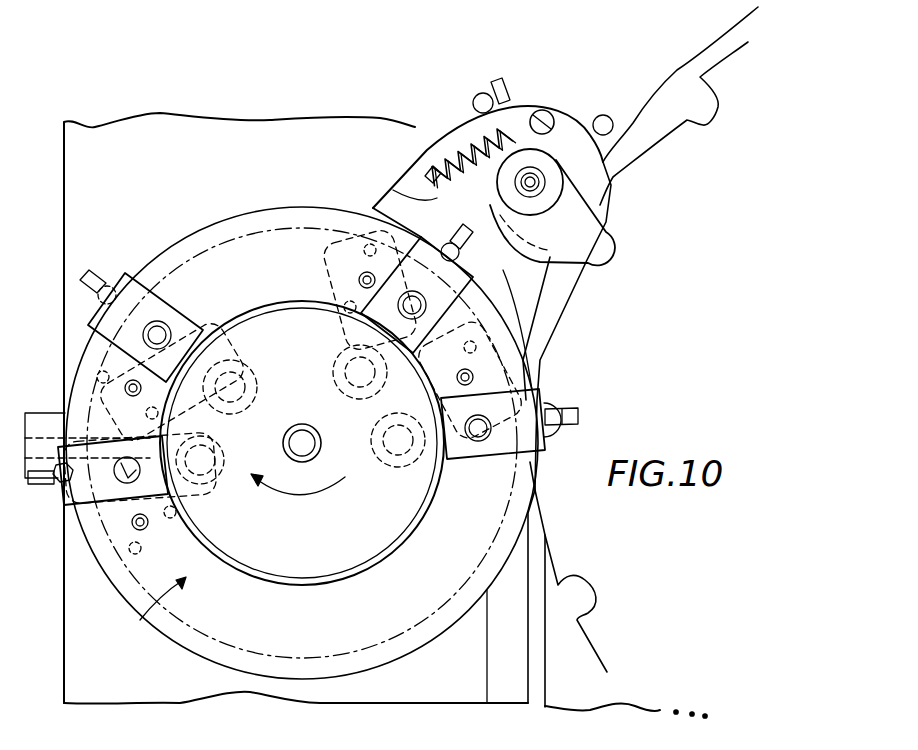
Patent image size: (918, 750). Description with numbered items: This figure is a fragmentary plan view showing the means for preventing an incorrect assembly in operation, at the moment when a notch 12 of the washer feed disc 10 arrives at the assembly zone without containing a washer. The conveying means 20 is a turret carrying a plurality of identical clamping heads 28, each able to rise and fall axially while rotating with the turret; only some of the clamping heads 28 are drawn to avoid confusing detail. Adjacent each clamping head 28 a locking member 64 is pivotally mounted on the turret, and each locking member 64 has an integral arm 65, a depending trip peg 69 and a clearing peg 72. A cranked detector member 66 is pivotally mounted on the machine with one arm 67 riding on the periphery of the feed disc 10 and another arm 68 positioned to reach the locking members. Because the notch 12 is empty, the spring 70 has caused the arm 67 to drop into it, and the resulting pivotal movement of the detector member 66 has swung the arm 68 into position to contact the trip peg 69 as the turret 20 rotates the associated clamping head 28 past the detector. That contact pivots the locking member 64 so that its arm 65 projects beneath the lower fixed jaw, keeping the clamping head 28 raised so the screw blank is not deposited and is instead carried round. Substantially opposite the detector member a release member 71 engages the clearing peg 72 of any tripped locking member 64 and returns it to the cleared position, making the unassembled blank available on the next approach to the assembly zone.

The washer feed disc 10 is at (642, 370).
The washer collecting and retaining notch 12 is at (599, 247).
The conveying means 20 is at (166, 599).
The clamping head 28 is at (129, 296).
The locking member 64 is at (130, 414).
The arm 65 is at (342, 350).
The cranked detector member 66 is at (460, 132).
The arm 67 is at (573, 233).
The arm 68 is at (397, 190).
The peg 69 is at (352, 251).
The spring 70 is at (512, 118).
The release member 71 is at (223, 447).
The clearing peg 72 is at (190, 504).